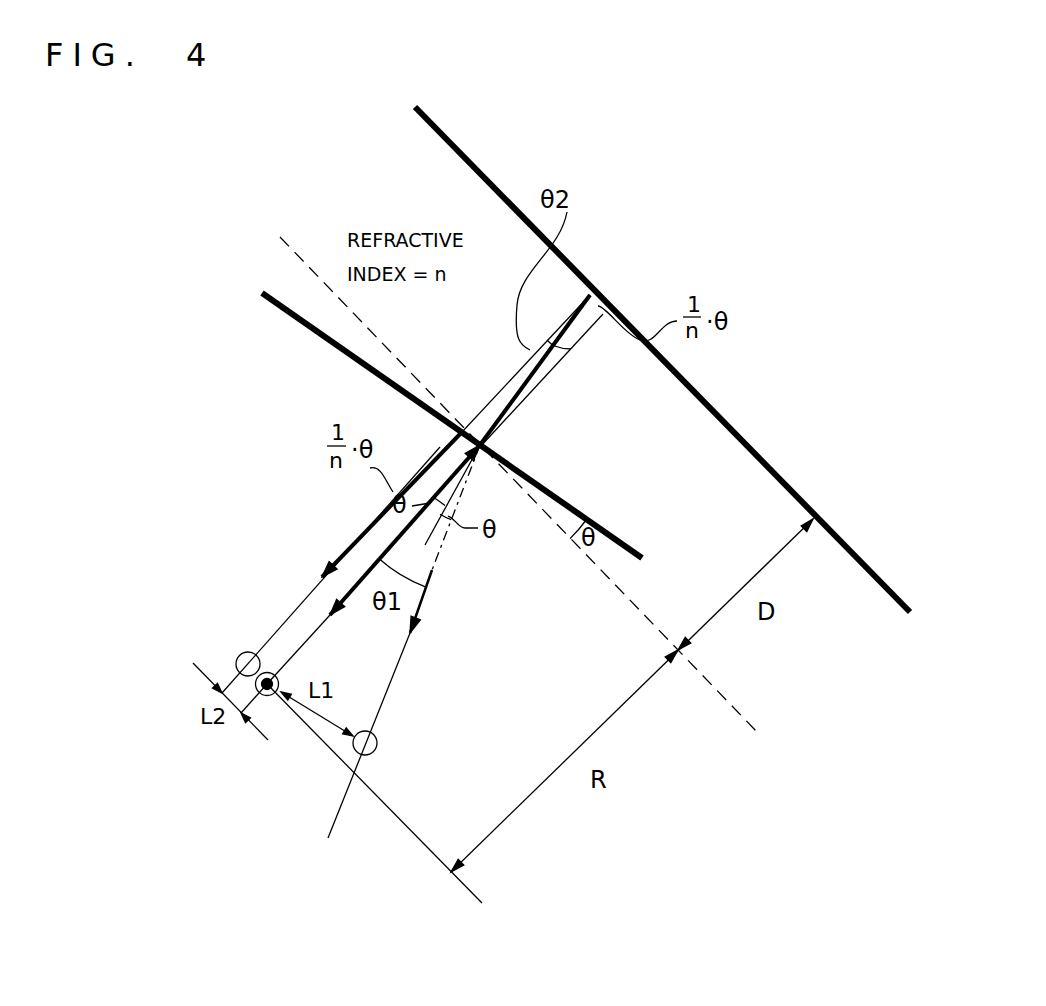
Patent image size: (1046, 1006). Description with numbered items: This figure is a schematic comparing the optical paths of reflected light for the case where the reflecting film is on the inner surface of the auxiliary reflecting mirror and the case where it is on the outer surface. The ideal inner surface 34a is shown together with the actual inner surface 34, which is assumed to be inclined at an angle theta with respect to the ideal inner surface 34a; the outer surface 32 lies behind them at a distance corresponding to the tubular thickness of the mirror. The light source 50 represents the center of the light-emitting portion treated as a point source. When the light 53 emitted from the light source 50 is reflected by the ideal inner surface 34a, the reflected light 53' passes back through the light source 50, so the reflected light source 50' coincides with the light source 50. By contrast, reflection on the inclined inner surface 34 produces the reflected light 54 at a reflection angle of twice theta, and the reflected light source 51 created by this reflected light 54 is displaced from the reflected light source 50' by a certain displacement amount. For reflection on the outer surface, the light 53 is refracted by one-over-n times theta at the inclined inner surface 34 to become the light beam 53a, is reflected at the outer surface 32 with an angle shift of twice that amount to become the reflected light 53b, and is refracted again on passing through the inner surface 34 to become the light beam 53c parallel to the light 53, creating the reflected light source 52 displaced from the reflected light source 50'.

The second surface of transparent plate 32 is at (470, 152).
The actual inner surface 34 is at (268, 300).
The ideal inner surface 34a is at (302, 260).
The light source 50 is at (249, 619).
The reflected light source 50' is at (277, 630).
The reflected light source 51 is at (380, 748).
The reflected light source 52 is at (236, 660).
The light 53 is at (393, 564).
The reflected light 53' is at (400, 704).
The light beam 53a is at (530, 383).
The reflected light 53b is at (496, 398).
The light beam 53c is at (355, 540).
The reflected light 54 is at (432, 572).